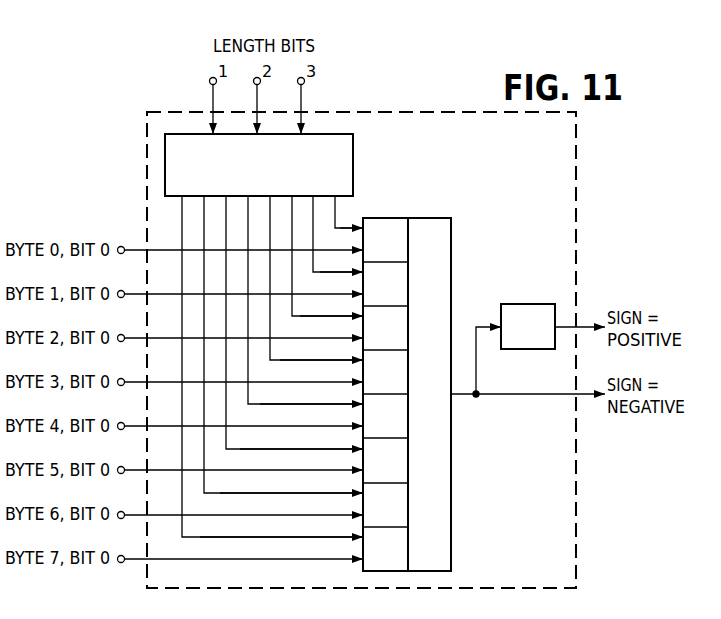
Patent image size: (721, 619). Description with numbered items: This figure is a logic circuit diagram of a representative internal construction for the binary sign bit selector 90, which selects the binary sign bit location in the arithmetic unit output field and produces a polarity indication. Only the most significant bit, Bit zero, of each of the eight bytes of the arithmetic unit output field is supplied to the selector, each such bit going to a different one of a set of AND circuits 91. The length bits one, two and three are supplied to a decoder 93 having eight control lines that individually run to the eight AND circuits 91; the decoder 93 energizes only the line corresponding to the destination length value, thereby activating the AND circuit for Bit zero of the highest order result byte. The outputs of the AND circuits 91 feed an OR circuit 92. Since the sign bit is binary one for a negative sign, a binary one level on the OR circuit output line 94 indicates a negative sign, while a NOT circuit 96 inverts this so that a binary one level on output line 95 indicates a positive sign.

The binary sign bit selector 90 is at (578, 217).
The AND circuits 91 is at (386, 208).
The OR circuit 92 is at (437, 225).
The decoder 93 is at (347, 148).
The OR circuit output line 94 is at (507, 397).
The output line 95 is at (582, 330).
The NOT circuit 96 is at (507, 305).